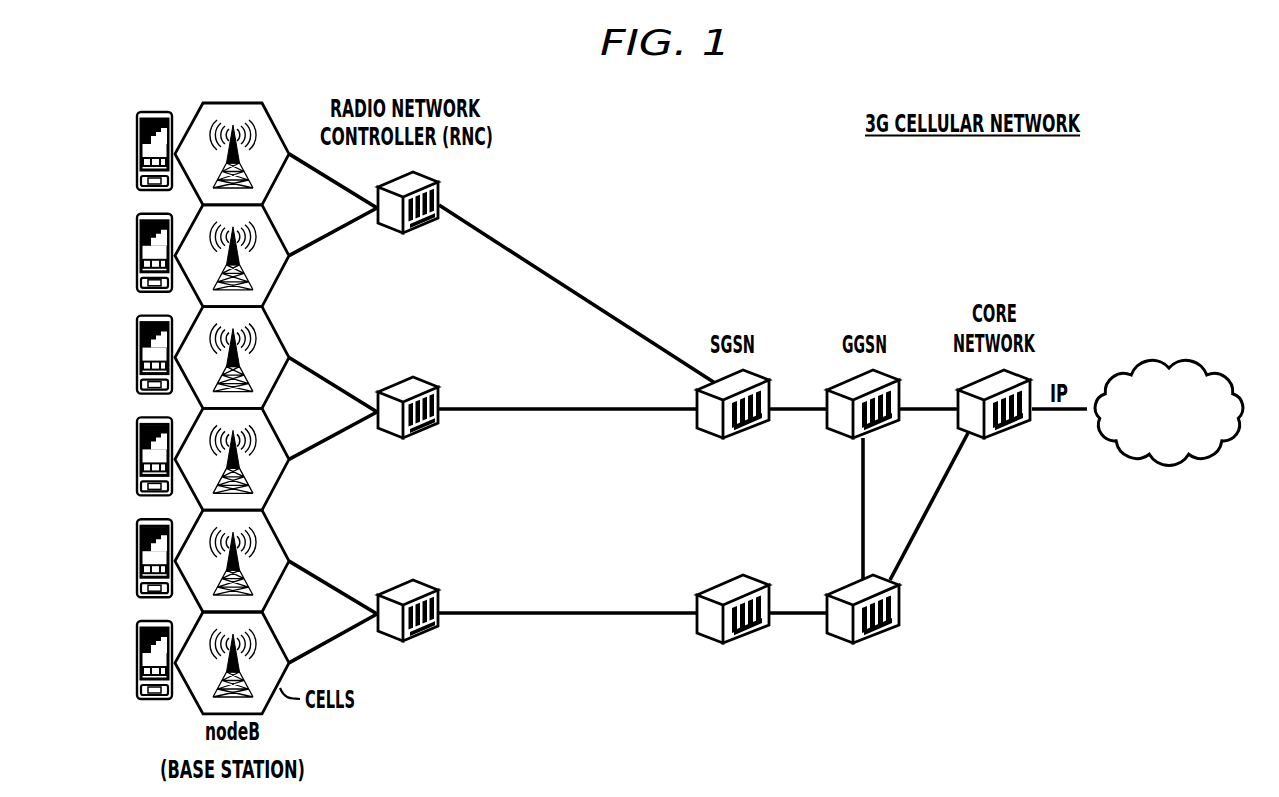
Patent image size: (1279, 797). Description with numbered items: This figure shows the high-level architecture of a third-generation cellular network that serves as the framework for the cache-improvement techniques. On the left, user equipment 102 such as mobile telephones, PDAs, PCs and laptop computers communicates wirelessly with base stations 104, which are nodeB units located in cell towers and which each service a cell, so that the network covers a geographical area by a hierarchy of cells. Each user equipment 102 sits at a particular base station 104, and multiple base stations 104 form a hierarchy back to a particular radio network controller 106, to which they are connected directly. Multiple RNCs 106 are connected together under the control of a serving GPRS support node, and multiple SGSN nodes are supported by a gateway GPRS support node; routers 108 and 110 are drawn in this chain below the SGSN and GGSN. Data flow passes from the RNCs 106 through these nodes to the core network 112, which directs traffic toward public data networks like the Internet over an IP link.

The user equipment 102 is at (152, 699).
The base station 104 is at (234, 126).
The radio network controller 106 is at (430, 628).
The serving GPRS support node (SGSN) 108 is at (708, 630).
The gateway GPRS support node (GGSN) 110 is at (838, 630).
The core network 112 is at (997, 430).